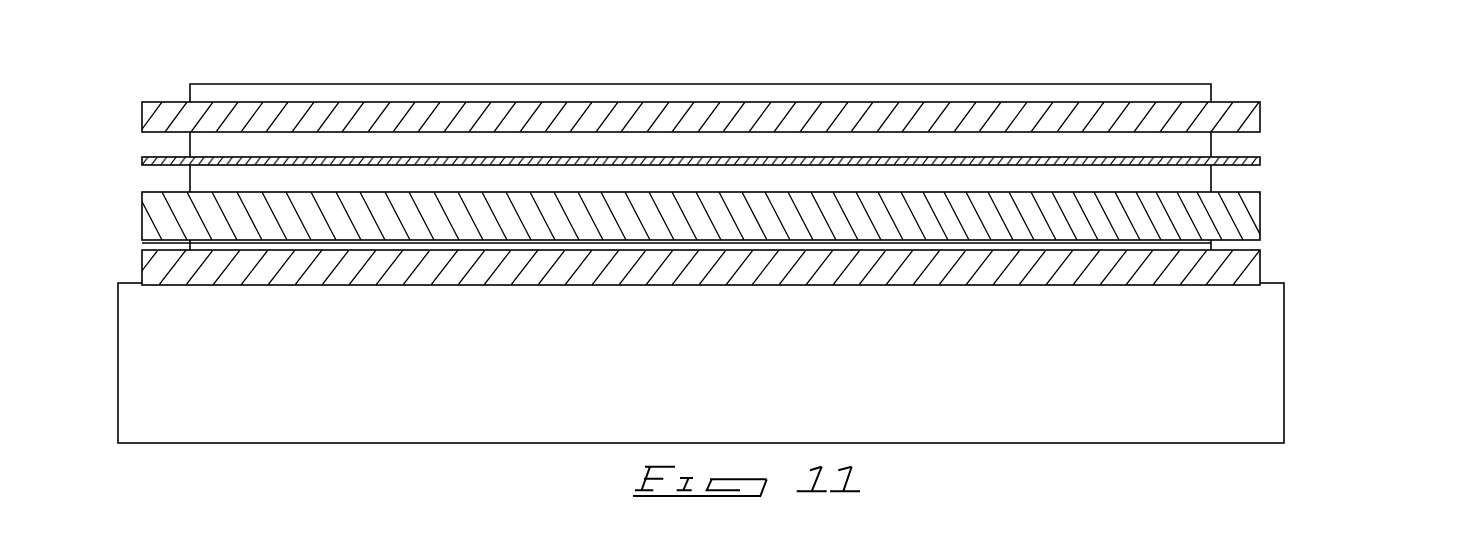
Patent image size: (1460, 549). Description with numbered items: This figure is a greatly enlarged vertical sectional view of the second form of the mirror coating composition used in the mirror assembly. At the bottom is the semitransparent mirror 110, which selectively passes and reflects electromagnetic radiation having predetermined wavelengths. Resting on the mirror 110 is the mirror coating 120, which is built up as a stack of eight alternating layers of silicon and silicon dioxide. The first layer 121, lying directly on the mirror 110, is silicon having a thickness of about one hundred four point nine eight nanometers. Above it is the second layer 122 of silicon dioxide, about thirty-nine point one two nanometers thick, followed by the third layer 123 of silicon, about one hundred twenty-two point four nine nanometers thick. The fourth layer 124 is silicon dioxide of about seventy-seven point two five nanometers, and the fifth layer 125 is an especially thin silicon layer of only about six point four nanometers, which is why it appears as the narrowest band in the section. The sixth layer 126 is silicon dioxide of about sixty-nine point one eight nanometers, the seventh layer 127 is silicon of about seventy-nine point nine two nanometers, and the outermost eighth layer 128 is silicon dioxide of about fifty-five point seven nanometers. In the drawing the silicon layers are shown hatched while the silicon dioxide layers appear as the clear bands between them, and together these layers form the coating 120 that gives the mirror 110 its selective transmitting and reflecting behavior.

The semitransparent mirror 110 is at (733, 380).
The mirror coating 120 is at (1350, 193).
The first layer 121 is at (1260, 268).
The second layer 122 is at (1213, 248).
The third layer 123 is at (150, 220).
The fourth layer 124 is at (1200, 178).
The fifth layer 125 is at (147, 162).
The sixth layer 126 is at (1200, 143).
The seventh layer 127 is at (150, 115).
The eighth layer 128 is at (1139, 95).